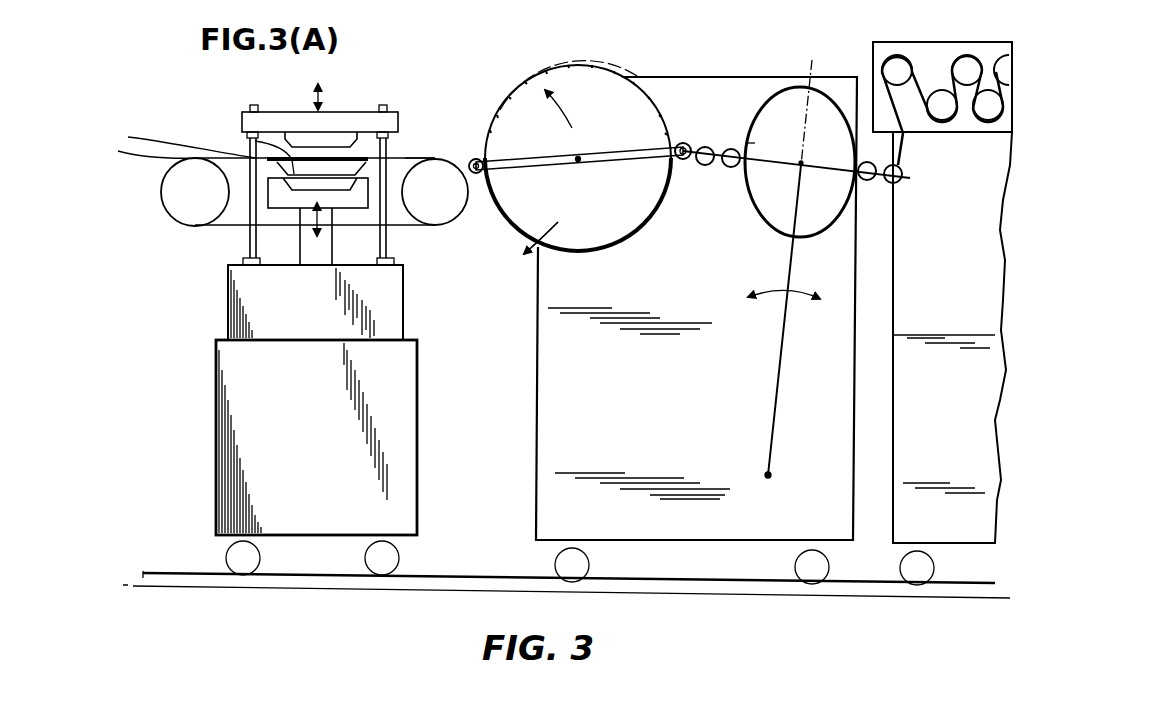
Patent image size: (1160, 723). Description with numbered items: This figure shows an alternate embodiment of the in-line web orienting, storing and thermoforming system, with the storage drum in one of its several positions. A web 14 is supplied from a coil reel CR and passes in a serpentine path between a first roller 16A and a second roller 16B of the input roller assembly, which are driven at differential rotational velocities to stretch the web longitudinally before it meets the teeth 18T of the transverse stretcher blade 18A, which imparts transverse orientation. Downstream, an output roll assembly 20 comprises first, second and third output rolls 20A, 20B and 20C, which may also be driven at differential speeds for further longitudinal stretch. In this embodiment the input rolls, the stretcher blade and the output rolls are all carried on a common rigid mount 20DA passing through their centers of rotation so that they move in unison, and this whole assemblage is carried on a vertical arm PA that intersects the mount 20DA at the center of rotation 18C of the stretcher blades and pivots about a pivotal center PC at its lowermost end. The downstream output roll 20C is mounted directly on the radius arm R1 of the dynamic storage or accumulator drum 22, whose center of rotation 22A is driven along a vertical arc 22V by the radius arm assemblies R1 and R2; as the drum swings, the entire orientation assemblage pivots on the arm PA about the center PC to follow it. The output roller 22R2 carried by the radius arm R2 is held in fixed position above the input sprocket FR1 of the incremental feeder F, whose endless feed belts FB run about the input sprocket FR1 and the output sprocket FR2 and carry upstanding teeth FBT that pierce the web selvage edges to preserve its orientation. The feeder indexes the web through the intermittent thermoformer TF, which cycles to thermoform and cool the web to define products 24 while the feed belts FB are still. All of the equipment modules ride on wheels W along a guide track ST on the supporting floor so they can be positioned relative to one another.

The web 14 is at (900, 122).
The coil reel / strip supply unit CR is at (927, 62).
The first roller 16A is at (905, 184).
The second roller 16B is at (868, 181).
The transverse stretcher blade 18A is at (840, 206).
The center of rotation of the transverse stretcher blades 18C is at (806, 160).
The teeth 18T is at (862, 68).
The output roll assembly 20 is at (753, 113).
The first output roll 20A is at (748, 143).
The second output roll 20B is at (703, 147).
The third output roll 20C is at (689, 160).
The common rigid mount 20DA is at (732, 168).
The dynamic storage or accumulator drum 22 is at (618, 129).
The central axis of rotation 22A is at (582, 162).
The output roller 22R2 is at (476, 159).
The vertical arc 22V is at (562, 254).
The radius arm assembly R1 is at (627, 156).
The radius arm assembly R2 is at (547, 170).
The input roller or sprocket FR1 is at (455, 203).
The output roller or sprocket FR2 is at (219, 203).
The incremental feeder F is at (435, 152).
The feed belts FB is at (401, 227).
The upstanding teeth FBT is at (453, 226).
The thermoformer TF is at (295, 98).
The products 24 is at (256, 141).
The vertical arm PA is at (780, 342).
The pivotal center PC is at (768, 475).
The wheels W is at (255, 563).
The guide track ST is at (470, 576).